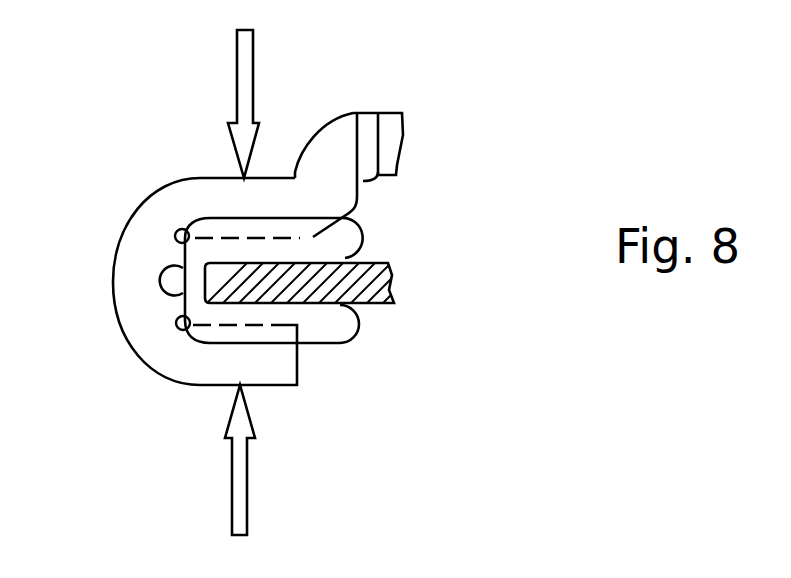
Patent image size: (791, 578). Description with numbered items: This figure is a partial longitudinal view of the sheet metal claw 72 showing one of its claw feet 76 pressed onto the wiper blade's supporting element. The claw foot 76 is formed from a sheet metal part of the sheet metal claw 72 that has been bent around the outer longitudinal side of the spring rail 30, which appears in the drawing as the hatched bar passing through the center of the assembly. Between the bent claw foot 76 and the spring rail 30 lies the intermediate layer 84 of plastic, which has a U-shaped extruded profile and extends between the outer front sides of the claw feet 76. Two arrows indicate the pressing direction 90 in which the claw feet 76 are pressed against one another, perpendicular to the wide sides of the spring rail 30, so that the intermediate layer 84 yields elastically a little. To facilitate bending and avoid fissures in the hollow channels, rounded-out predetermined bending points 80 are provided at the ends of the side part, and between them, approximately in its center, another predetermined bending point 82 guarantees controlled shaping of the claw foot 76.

The spring rail 30 is at (392, 277).
The sheet metal claw 72 is at (395, 137).
The claw foot 76 is at (140, 383).
The predetermined bending point 80 is at (177, 231).
The predetermined bending point 82 is at (160, 275).
The intermediate layer 84 is at (330, 328).
The pressing direction 90 is at (247, 102).